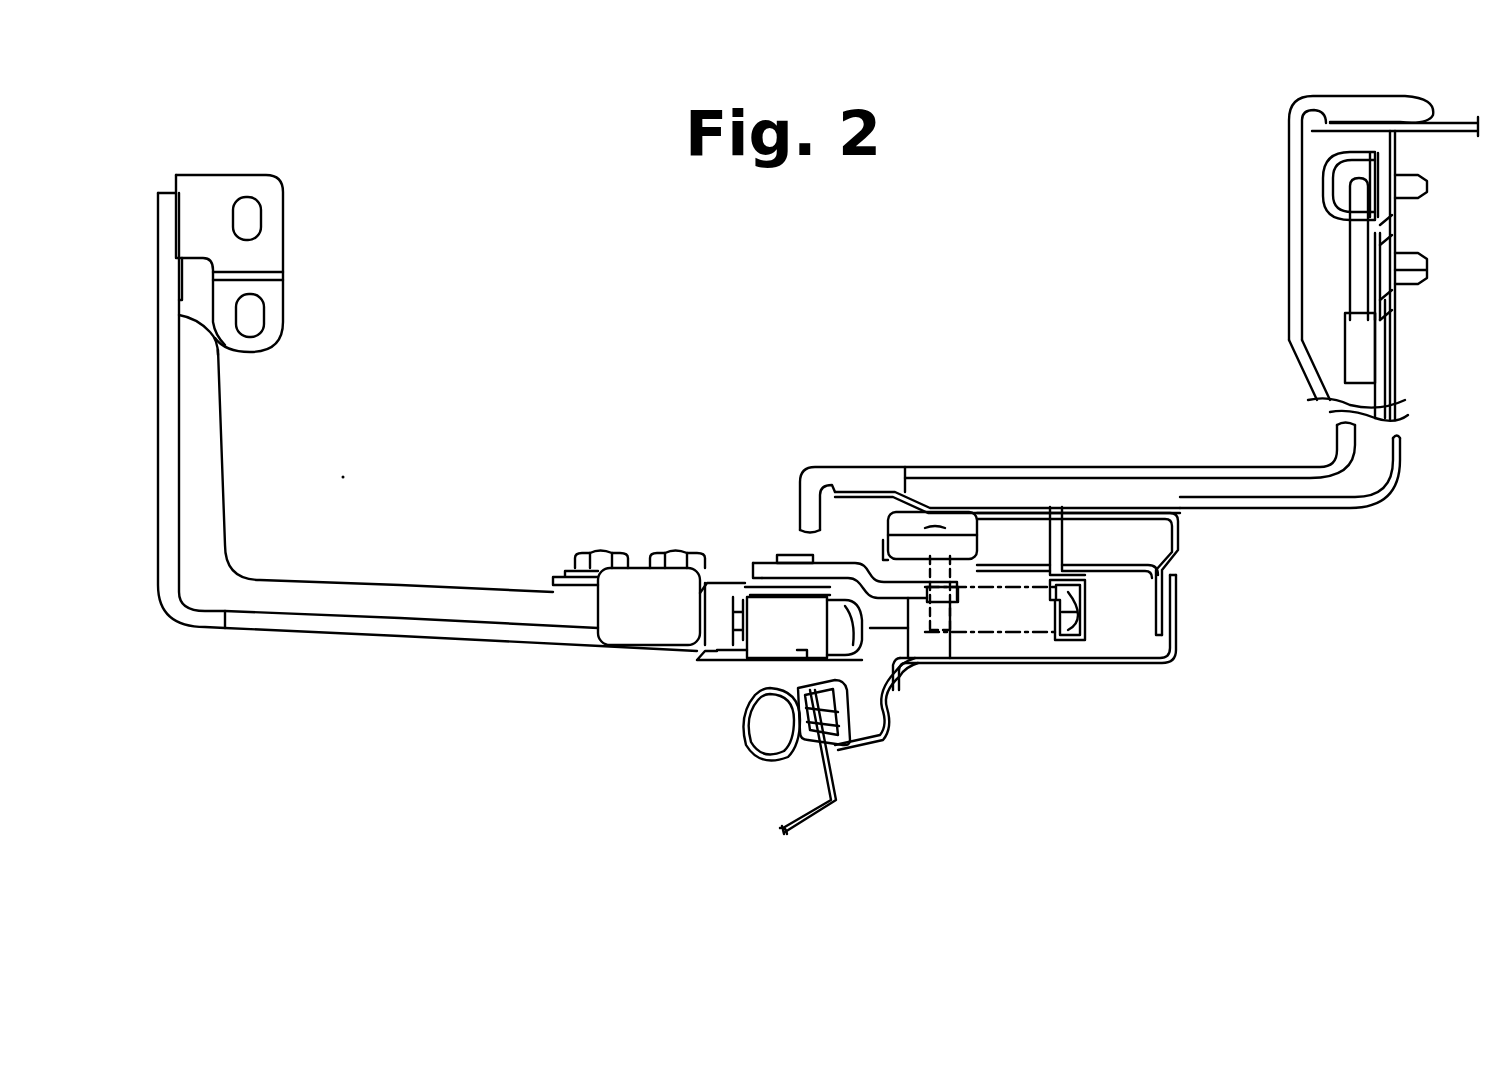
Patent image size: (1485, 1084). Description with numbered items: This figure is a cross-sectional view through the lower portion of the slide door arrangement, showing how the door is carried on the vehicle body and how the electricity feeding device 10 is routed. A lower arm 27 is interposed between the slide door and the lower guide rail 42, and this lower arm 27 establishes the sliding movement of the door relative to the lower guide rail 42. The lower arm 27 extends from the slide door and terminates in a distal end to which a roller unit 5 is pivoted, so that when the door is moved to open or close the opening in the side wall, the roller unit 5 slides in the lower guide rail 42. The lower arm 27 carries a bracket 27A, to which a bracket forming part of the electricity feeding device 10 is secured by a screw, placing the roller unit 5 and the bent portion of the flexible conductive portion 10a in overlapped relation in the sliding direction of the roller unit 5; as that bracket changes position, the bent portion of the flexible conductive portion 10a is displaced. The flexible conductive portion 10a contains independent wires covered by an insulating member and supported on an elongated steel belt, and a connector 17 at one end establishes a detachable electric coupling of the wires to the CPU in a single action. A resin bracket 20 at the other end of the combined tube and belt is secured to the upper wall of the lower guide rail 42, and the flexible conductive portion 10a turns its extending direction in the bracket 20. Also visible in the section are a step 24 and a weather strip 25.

The roller unit 5 is at (878, 583).
The electricity feeding device 10 is at (1020, 640).
The flexible conductive portion 10a is at (985, 625).
The connector 17 is at (1325, 191).
The bracket 20 is at (1085, 605).
The step 24 is at (1003, 466).
The weather strip 25 is at (742, 748).
The lower arm 27 is at (533, 647).
The bracket 27A is at (743, 593).
The lower guide rail 42 is at (910, 505).